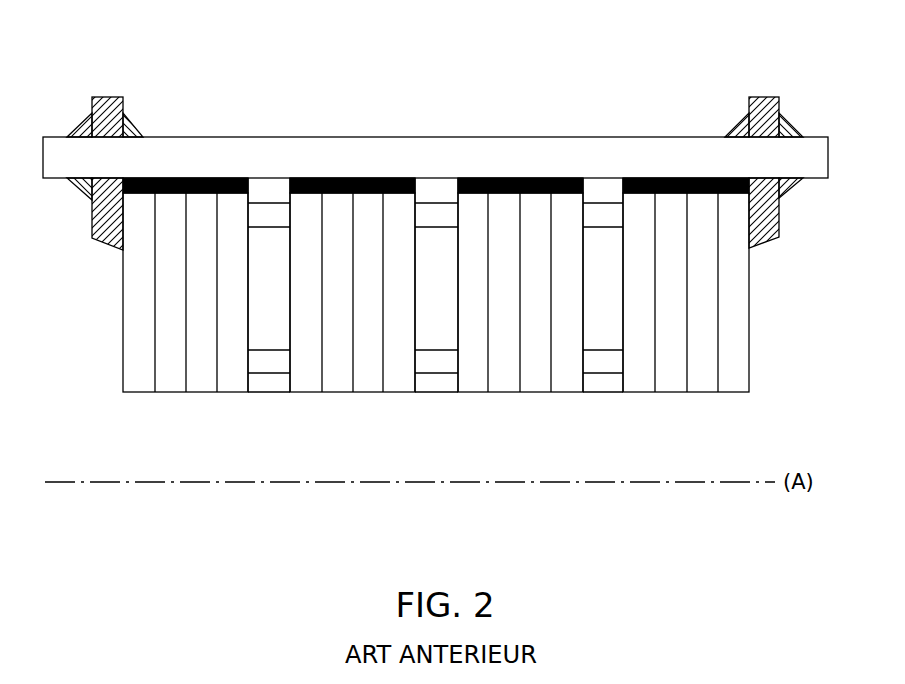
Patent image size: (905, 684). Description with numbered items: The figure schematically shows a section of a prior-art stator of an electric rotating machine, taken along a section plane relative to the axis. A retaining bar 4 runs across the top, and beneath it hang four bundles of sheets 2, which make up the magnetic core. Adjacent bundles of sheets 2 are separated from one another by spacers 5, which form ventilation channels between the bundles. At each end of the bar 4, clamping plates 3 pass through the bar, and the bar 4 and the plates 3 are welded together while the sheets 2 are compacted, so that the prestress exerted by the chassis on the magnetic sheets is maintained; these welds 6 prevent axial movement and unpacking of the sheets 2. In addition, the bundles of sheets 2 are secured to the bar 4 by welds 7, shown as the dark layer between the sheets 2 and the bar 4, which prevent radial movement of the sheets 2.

The bundles of sheets 2 is at (123, 400).
The clamping plates 3 is at (107, 97).
The retaining bar 4 is at (436, 137).
The spacers 5 is at (268, 373).
The welds 6 is at (83, 122).
The welds 7 is at (318, 177).